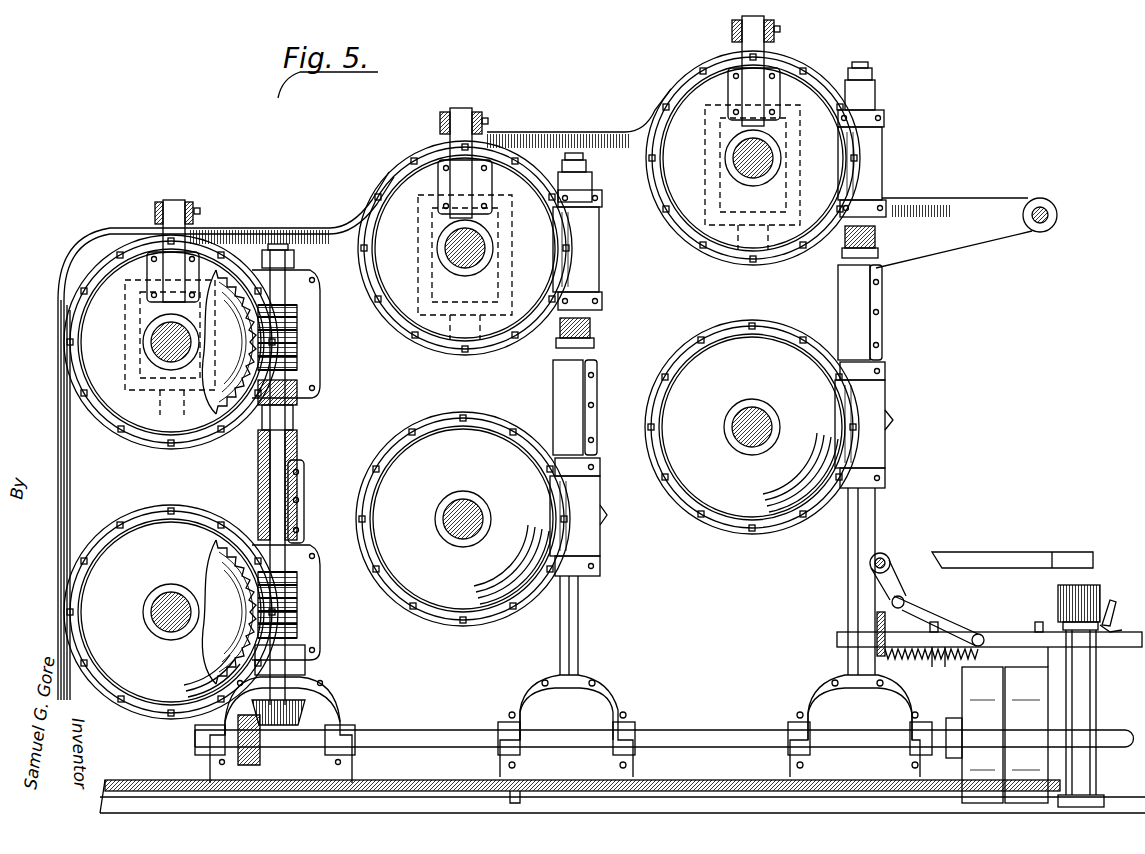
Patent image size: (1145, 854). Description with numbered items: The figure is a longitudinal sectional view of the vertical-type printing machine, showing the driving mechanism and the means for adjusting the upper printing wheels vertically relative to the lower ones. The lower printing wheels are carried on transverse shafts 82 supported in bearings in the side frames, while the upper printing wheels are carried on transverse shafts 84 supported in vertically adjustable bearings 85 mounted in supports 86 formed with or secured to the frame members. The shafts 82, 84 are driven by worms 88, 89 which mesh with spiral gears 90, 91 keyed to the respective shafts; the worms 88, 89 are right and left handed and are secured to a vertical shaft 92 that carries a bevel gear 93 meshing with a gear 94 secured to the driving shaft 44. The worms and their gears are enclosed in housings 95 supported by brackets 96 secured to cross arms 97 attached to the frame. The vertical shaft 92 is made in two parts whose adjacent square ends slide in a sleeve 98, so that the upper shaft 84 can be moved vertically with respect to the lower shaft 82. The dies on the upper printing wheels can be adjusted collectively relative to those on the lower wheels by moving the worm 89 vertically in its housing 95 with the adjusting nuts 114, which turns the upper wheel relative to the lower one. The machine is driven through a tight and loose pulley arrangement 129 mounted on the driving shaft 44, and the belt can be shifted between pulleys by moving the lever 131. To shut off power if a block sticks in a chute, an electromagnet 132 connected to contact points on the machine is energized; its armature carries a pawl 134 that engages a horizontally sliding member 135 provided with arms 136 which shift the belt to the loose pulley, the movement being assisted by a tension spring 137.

The driving shaft 44 is at (440, 730).
The transverse shafts 82 is at (152, 618).
The transverse shafts 84 is at (160, 342).
The vertically adjustable bearings 85 is at (75, 335).
The supports 86 is at (62, 313).
The worm 88 is at (300, 620).
The worm 89 is at (300, 332).
The spiral gear 90 is at (225, 530).
The spiral gear 91 is at (232, 275).
The vertical shaft 92 is at (305, 672).
The bevel gear 93 is at (320, 700).
The gear 94 is at (225, 762).
The housings 95 is at (302, 292).
The brackets 96 is at (178, 204).
The cross arms 97 is at (190, 212).
The sleeve 98 is at (260, 480).
The adjusting nuts 114 is at (280, 254).
The tight and loose pulley arrangement 129 is at (965, 702).
The lever 131 is at (960, 552).
The electromagnet 132 is at (1085, 585).
The pawl 134 is at (1110, 618).
The horizontally sliding member 135 is at (1020, 632).
The arms 136 is at (1047, 664).
The tension spring 137 is at (912, 650).